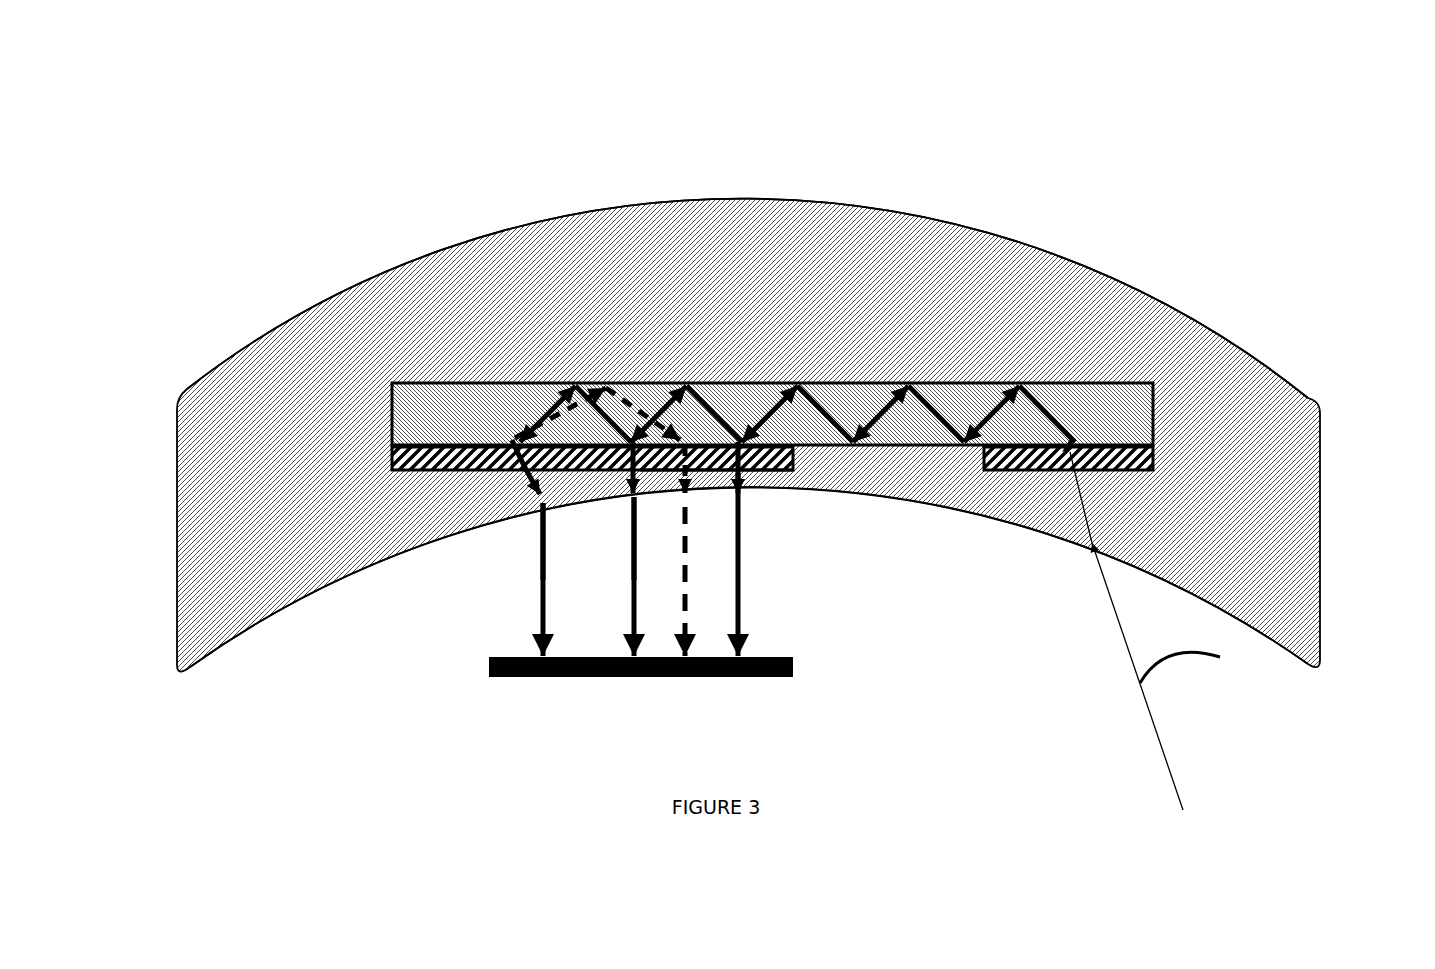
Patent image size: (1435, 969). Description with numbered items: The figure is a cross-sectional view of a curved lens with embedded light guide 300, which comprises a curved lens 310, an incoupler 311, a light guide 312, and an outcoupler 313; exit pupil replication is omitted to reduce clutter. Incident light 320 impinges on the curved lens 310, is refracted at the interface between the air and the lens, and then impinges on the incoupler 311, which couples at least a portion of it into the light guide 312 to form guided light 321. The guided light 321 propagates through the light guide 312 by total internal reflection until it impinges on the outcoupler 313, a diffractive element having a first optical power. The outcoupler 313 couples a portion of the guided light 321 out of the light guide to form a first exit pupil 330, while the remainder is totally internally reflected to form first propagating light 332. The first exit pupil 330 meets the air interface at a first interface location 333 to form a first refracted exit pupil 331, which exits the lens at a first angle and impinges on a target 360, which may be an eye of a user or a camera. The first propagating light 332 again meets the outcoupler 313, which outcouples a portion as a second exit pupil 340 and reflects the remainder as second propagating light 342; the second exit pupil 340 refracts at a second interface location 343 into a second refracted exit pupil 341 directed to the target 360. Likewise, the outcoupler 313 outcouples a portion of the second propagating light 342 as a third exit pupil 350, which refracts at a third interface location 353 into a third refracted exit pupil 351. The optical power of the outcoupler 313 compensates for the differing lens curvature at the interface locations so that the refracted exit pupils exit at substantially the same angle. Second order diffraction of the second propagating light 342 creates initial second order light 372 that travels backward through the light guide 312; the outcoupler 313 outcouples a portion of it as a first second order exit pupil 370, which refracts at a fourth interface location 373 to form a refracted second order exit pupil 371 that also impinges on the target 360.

The curved lens with embedded light guide 300 is at (86, 143).
The curved lens 310 is at (1299, 430).
The incoupler 311 is at (1153, 462).
The light guide 312 is at (437, 403).
The outcoupler 313 is at (392, 460).
The incident light 320 is at (1162, 631).
The guided light 321 is at (880, 380).
The first exit pupil 330 is at (793, 467).
The first refracted exit pupil 331 is at (757, 490).
The first propagating light 332 is at (710, 403).
The first interface location 333 is at (770, 478).
The second exit pupil 340 is at (632, 497).
The second refracted exit pupil 341 is at (632, 558).
The second propagating light 342 is at (598, 403).
The second interface location 343 is at (631, 545).
The third exit pupil 350 is at (522, 476).
The third refracted exit pupil 351 is at (537, 557).
The third interface location 353 is at (540, 503).
The target 360 is at (738, 677).
The first second order exit pupil 370 is at (800, 480).
The refracted second order exit pupil 371 is at (745, 492).
The initial second order light 372 is at (615, 403).
The fourth interface location 373 is at (688, 495).